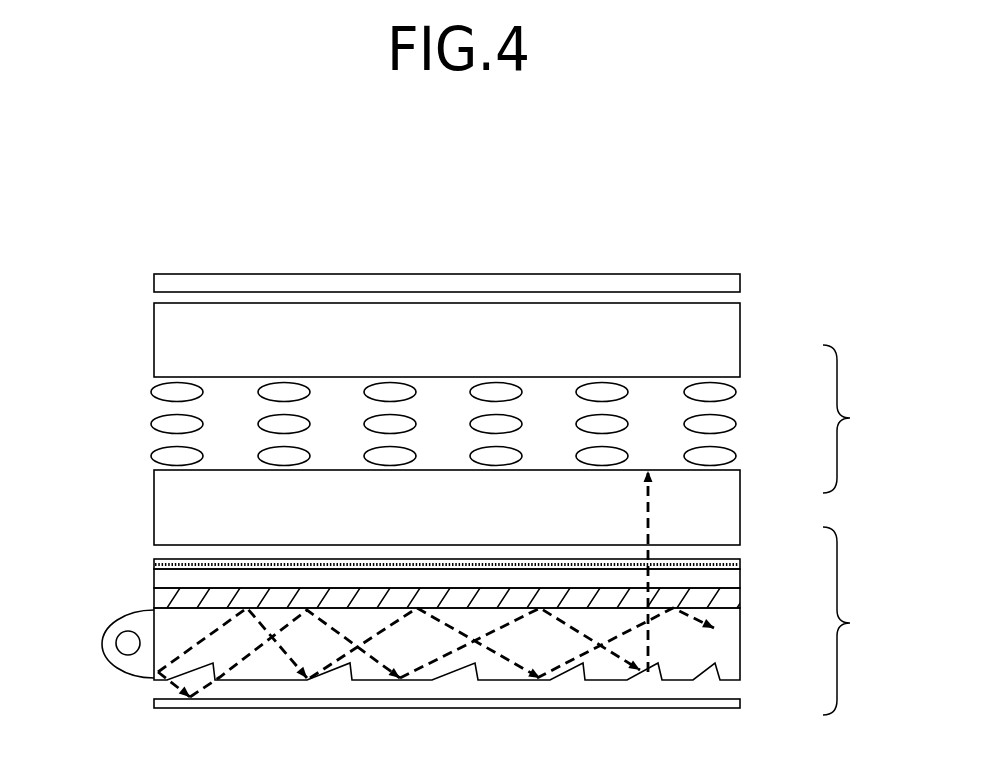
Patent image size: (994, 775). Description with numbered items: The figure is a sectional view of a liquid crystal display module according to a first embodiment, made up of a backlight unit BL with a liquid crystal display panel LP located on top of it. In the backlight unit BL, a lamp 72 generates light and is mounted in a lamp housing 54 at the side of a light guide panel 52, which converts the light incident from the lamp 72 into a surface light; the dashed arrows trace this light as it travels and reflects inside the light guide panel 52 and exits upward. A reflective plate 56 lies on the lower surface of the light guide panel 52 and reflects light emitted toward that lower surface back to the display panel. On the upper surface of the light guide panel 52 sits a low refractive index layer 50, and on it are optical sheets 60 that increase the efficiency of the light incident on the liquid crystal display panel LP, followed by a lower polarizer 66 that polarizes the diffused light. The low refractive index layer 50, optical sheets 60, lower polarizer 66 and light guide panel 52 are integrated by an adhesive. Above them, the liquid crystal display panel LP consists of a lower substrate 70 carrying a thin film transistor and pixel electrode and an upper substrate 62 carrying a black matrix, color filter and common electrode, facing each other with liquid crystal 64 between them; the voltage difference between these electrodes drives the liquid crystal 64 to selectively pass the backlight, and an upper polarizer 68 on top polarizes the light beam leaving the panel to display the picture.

The upper polarizer 68 is at (740, 279).
The upper substrate 62 is at (740, 350).
The liquid crystal 64 is at (736, 424).
The lower substrate 70 is at (740, 485).
The lower polarizer 66 is at (740, 561).
The optical sheets 60 is at (740, 577).
The low refractive index layer 50 is at (740, 598).
The light guide panel 52 is at (740, 641).
The reflective plate 56 is at (740, 703).
The lamp housing 54 is at (102, 655).
The lamp 72 is at (120, 637).
The liquid crystal display panel LP is at (859, 419).
The backlight unit BL is at (859, 621).